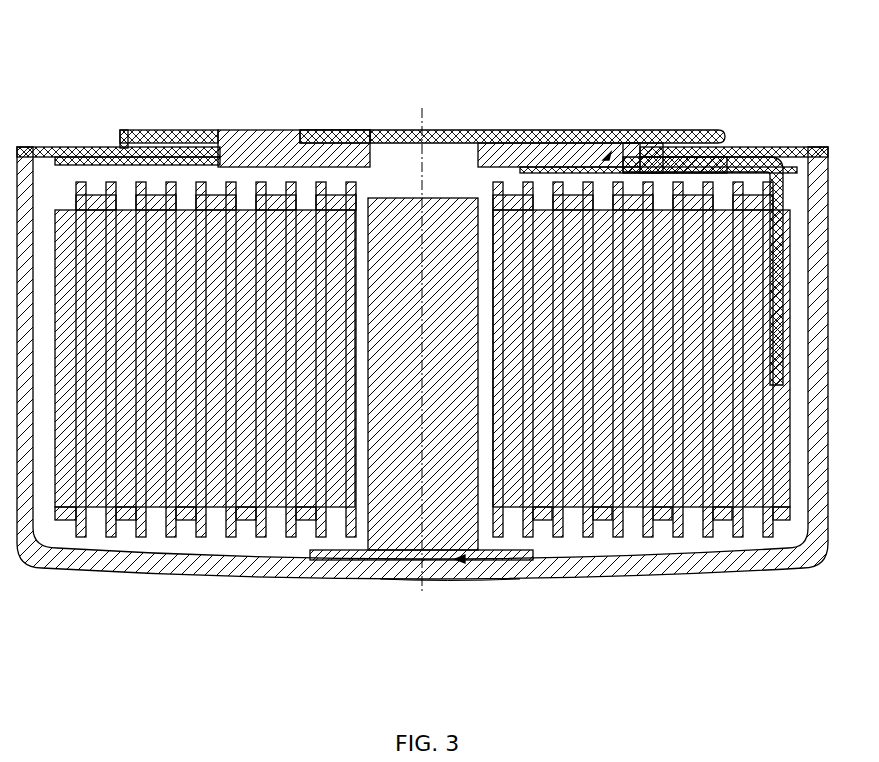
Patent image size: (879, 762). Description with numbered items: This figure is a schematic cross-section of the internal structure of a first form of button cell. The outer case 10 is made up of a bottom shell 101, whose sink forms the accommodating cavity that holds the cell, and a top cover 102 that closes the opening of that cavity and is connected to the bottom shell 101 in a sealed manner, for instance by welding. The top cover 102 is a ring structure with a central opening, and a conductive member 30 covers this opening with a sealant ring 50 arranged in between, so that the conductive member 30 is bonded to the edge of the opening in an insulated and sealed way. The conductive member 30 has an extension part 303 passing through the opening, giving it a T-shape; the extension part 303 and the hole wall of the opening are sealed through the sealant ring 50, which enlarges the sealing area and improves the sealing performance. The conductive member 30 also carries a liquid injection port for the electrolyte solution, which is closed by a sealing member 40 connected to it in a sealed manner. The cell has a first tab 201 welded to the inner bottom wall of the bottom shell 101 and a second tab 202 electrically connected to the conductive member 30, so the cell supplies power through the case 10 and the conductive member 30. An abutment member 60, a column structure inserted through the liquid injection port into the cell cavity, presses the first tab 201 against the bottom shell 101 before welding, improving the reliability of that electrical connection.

The case 10 is at (422, 299).
The bottom shell 101 is at (28, 147).
The top cover 102 is at (80, 147).
The sealant ring 50 is at (207, 128).
The extension part 303 is at (300, 130).
The sealing member 40 is at (448, 130).
The conductive member 30 is at (540, 143).
The second tab 202 is at (612, 132).
The abutment member 60 is at (386, 562).
The first tab 201 is at (445, 580).